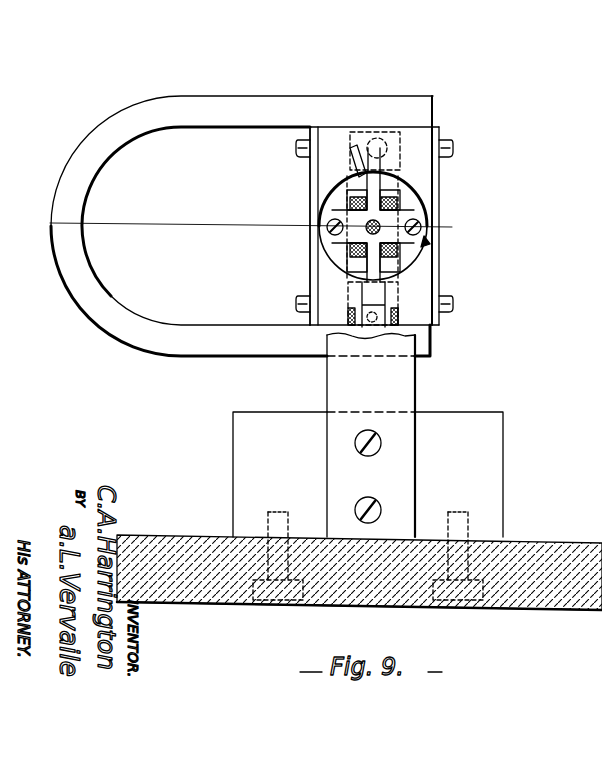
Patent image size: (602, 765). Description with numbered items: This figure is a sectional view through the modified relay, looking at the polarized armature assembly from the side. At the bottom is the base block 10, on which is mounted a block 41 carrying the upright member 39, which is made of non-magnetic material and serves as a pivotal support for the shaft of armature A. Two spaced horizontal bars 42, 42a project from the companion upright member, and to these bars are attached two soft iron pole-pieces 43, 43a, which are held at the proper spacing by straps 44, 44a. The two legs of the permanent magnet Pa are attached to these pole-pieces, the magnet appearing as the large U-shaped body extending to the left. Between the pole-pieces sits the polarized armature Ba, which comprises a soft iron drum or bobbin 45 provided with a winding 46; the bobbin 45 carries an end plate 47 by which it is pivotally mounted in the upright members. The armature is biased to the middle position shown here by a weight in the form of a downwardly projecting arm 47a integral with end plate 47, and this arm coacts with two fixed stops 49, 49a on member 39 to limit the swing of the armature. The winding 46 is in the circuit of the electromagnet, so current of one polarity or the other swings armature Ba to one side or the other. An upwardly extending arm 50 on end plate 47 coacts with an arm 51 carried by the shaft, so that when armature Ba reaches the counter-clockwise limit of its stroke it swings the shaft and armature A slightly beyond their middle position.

The permanent magnet Pa is at (214, 97).
The horizontal bar 42 is at (350, 140).
The pole-piece 43 is at (425, 147).
The pole-piece 43a is at (432, 307).
The upwardly extending arm 50 is at (378, 145).
The arm 51 is at (352, 160).
The polarized armature Ba is at (392, 188).
The strap 44 is at (320, 198).
The strap 44a is at (404, 206).
The winding 46 is at (430, 223).
The end plate 47 is at (340, 246).
The soft iron drum or bobbin 45 is at (428, 248).
The downwardly projecting arm 47a is at (352, 292).
The horizontal bar 42a is at (403, 283).
The fixed stop 49 is at (350, 318).
The fixed stop 49a is at (412, 318).
The upright member 39 is at (326, 385).
The block 41 is at (233, 489).
The base block 10 is at (563, 611).